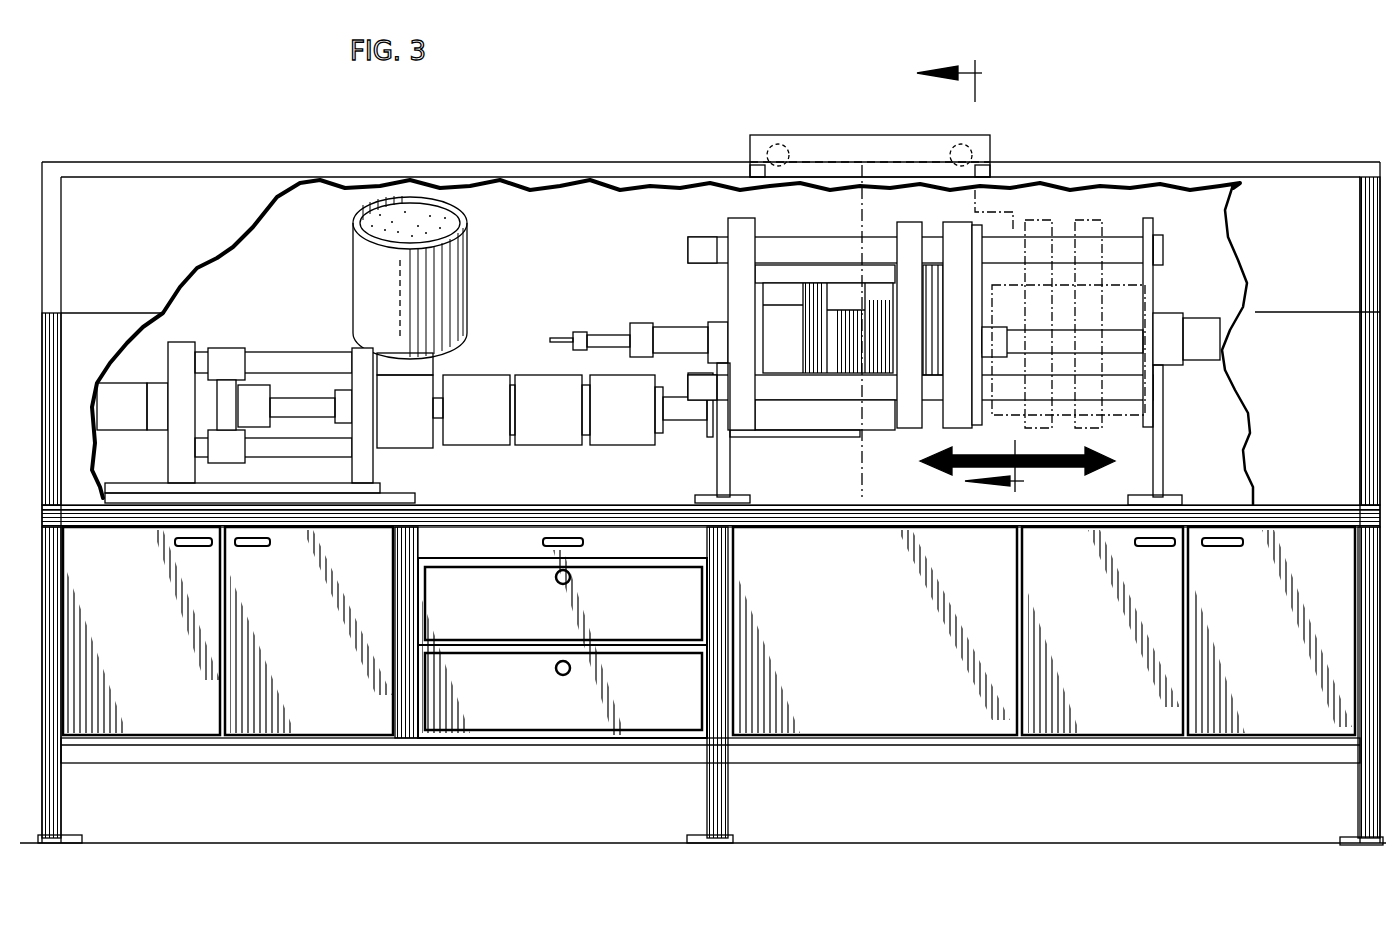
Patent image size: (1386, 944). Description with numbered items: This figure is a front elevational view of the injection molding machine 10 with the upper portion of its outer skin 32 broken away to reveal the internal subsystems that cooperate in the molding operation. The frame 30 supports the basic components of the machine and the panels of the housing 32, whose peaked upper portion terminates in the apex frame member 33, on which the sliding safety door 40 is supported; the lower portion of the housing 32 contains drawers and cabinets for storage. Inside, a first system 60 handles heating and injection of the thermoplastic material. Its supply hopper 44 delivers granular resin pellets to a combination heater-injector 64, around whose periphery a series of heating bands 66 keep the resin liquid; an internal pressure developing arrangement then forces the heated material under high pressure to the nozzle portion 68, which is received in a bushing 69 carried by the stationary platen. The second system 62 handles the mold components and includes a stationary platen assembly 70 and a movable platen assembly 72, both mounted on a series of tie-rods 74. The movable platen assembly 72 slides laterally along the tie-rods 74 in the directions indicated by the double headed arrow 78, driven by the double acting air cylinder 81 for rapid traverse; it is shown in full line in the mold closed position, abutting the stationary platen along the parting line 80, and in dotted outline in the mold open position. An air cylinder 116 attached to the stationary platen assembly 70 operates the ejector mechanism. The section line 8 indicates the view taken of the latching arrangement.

The section line 8- 8 is at (979, 268).
The machine 10 is at (703, 469).
The frame 30 is at (720, 790).
The outer skin or machine housing 32 is at (178, 190).
The main or apex frame member 33 is at (260, 170).
The safety door or shield 40 is at (990, 150).
The supply hopper 44 is at (460, 260).
The heating and injection system 60 is at (405, 381).
The mold component handling system 62 is at (954, 299).
The heater-injector 64 is at (410, 441).
The heating bands 66 is at (595, 427).
The nozzle portion 68 is at (685, 420).
The bushing 69 is at (805, 437).
The stationary platen assembly 70 is at (808, 350).
The movable platen assembly 72 is at (955, 245).
The tie-rods 74 is at (780, 247).
The arrow 78 is at (1075, 465).
The parting line 80 is at (875, 215).
The air cylinder 81 is at (1203, 327).
The air cylinder or piston 116 is at (665, 330).